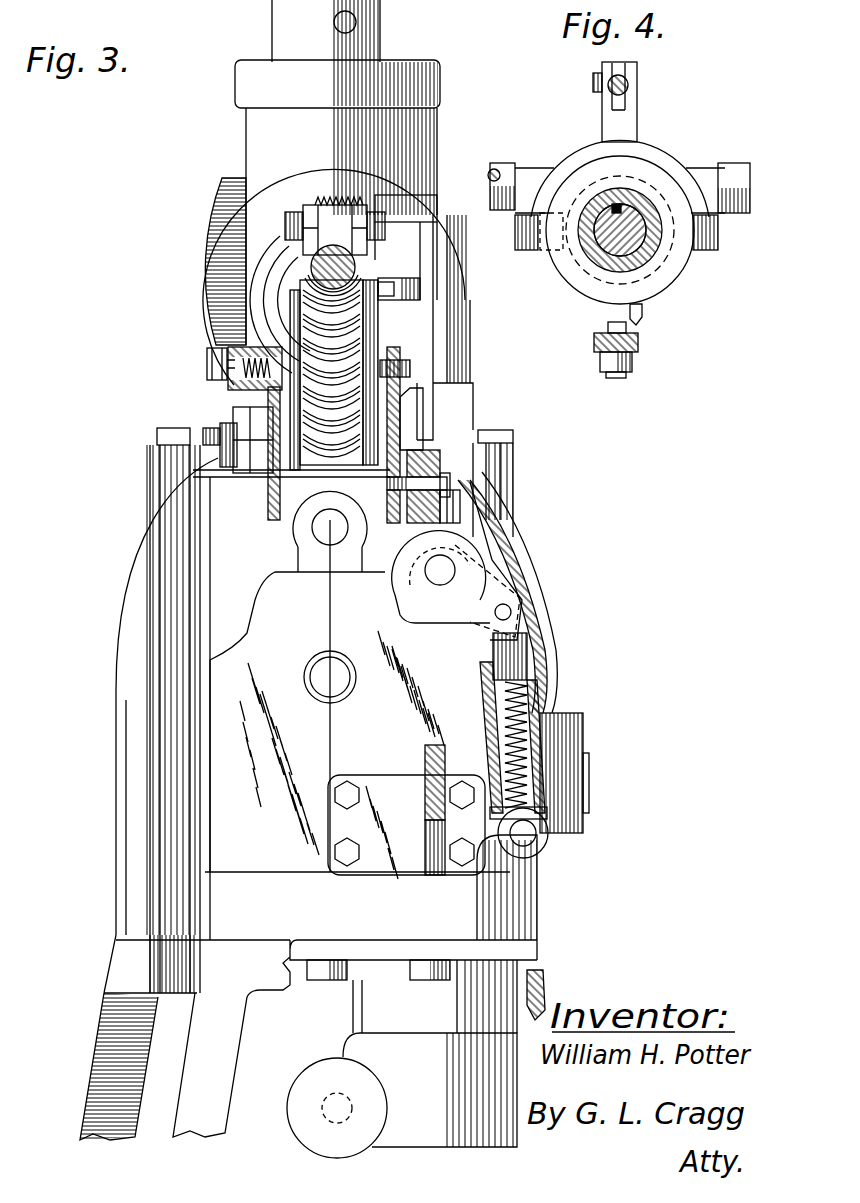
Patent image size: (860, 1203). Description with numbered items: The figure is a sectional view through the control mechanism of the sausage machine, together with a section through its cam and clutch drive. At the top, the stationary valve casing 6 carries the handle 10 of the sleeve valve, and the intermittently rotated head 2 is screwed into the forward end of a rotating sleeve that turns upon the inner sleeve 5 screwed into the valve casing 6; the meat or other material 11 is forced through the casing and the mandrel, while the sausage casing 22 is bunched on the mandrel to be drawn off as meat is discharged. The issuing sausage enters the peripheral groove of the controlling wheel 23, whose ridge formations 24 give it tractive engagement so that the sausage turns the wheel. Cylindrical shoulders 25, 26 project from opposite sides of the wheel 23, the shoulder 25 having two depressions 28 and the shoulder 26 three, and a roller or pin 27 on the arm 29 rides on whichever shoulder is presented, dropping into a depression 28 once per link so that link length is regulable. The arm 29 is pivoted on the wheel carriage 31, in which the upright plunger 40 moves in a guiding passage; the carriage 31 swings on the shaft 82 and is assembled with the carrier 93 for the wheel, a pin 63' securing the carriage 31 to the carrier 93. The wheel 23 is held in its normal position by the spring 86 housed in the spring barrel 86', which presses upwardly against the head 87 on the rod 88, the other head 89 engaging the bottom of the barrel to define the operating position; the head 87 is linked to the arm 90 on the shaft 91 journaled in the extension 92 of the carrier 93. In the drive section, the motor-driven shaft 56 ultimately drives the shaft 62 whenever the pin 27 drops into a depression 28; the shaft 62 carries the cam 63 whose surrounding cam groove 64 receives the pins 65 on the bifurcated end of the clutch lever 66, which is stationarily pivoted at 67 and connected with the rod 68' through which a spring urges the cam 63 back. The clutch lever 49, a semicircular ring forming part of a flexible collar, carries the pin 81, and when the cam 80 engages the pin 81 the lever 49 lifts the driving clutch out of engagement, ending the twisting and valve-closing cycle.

In FIG. 3, the handle 10 is at (336, 20).
In FIG. 3, the valve casing 6 is at (425, 135).
In FIG. 3, the head 2 is at (283, 273).
In FIG. 3, the shoulder 25 is at (262, 303).
In FIG. 3, the sleeve 5 is at (272, 283).
In FIG. 3, the casing 22 is at (300, 268).
In FIG. 3, the ridge formations 24 is at (300, 222).
In FIG. 3, the meat 11 is at (311, 258).
In FIG. 3, the pin 27 is at (440, 236).
In FIG. 3, the arm 29 is at (428, 258).
In FIG. 3, the shoulder 26 is at (382, 340).
In FIG. 3, the depressions 28 is at (258, 396).
In FIG. 3, the shaft 82 is at (229, 432).
In FIG. 3, the wheel carriage 31 is at (248, 455).
In FIG. 3, the wheel 23 is at (335, 432).
In FIG. 3, the carrier 93 is at (430, 408).
In FIG. 3, the bolt 63' is at (470, 469).
In FIG. 3, the plunger 40 is at (441, 626).
In FIG. 3, the shaft 91 is at (442, 569).
In FIG. 3, the arm 90 is at (494, 587).
In FIG. 3, the extension 92 is at (483, 543).
In FIG. 3, the head 87 is at (518, 647).
In FIG. 3, the spring 86 is at (535, 734).
In FIG. 3, the spring barrel 86' is at (570, 746).
In FIG. 3, the rod 88 is at (547, 742).
In FIG. 3, the head 89 is at (553, 812).
In FIG. 3, the shaft 62 is at (326, 673).
In FIG. 4, the shaft 62 is at (662, 251).
In FIG. 3, the motor driven shaft 56 is at (337, 1095).
In FIG. 4, the clutch lever 66 is at (628, 132).
In FIG. 4, the rod 68' is at (634, 78).
In FIG. 4, the pivot 67 is at (504, 166).
In FIG. 4, the pins 65 is at (556, 235).
In FIG. 4, the cam 63 is at (631, 236).
In FIG. 4, the cam groove 64 is at (623, 206).
In FIG. 4, the cam 80 is at (644, 315).
In FIG. 4, the pin 81 is at (606, 328).
In FIG. 4, the clutch lever 49 is at (640, 348).